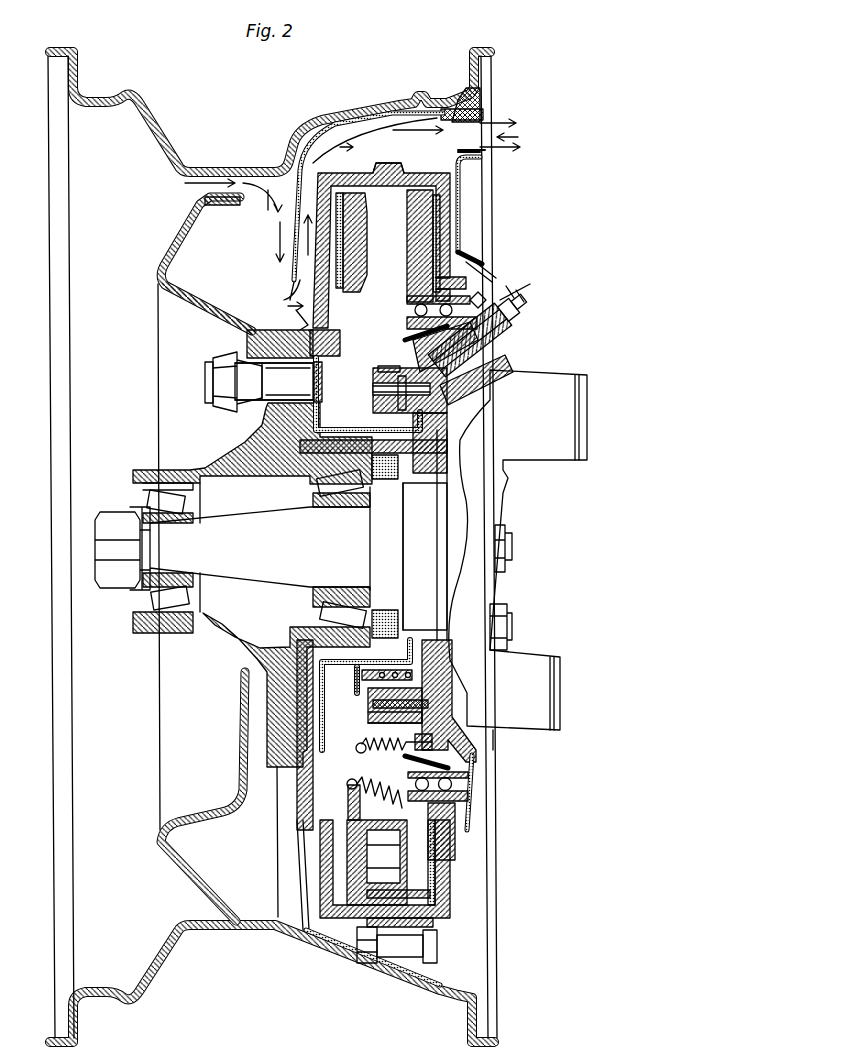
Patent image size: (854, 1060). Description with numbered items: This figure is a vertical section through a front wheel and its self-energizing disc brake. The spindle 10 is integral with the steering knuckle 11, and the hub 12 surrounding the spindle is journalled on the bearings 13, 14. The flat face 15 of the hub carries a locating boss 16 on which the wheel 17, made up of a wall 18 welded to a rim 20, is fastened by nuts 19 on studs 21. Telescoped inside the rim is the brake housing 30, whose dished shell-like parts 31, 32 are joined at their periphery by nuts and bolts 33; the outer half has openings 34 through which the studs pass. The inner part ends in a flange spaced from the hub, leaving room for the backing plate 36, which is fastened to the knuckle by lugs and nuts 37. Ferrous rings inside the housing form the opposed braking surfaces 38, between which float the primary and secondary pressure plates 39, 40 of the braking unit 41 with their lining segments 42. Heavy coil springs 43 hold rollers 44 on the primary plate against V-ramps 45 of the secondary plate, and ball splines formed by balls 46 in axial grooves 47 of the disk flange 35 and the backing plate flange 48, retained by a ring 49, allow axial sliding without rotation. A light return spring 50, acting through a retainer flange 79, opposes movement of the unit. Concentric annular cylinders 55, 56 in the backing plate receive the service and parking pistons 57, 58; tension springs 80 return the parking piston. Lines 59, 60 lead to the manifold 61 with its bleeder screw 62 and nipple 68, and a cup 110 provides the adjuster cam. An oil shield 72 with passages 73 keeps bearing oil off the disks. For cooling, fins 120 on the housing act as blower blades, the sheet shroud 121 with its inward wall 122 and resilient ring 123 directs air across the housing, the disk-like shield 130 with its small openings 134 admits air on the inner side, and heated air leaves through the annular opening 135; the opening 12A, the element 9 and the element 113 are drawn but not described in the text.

The seal 9 is at (400, 455).
The front wheel spindle 10 is at (262, 530).
The steering knuckle 11 is at (556, 372).
The hub 12 is at (230, 653).
The vent opening 12A is at (203, 198).
The front wheel bearing 13 is at (200, 602).
The front wheel bearing 14 is at (318, 608).
The face of the hub 15 is at (250, 346).
The locating boss 16 is at (290, 420).
The wheel 17 is at (166, 230).
The wall 18 is at (204, 304).
The nuts 19 is at (222, 408).
The rim 20 is at (148, 118).
The studs 21 is at (206, 384).
The brake housing 30 is at (286, 302).
The shell-like part 31 is at (366, 172).
The shell-like part 32 is at (404, 170).
The nuts and bolts 33 is at (395, 960).
The openings 34 is at (322, 376).
The flange 35 is at (474, 832).
The brake backing plate 36 is at (476, 758).
The lugs and nuts 37 is at (513, 546).
The braking surfaces 38 is at (338, 290).
The primary pressure plate 39 is at (362, 258).
The secondary pressure plate 40 is at (407, 286).
The braking unit 41 is at (436, 296).
The brake lining segments 42 is at (343, 192).
The heavy coil springs 43 is at (386, 784).
The rollers 44 is at (372, 840).
The V-ramps 45 is at (398, 903).
The balls 46 is at (468, 782).
The axial grooves 47 is at (415, 312).
The flange 48 is at (405, 338).
The retainer ring 49 is at (480, 302).
The return coil spring 50 is at (360, 416).
The inner annular hydraulic cylinder 55 is at (373, 390).
The outer annular hydraulic cylinder 56 is at (390, 366).
The service brake piston 57 is at (370, 702).
The parking brake piston 58 is at (368, 720).
The line 59 is at (447, 426).
The line 60 is at (425, 372).
The manifold 61 is at (488, 382).
The bleeder screw 62 is at (512, 336).
The nipple 68 is at (520, 318).
The oil shield 72 is at (312, 382).
The passages 73 is at (296, 314).
The radially extending flange 79 is at (355, 690).
The tension springs 80 is at (362, 752).
The cup 110 is at (426, 340).
The pin 113 is at (398, 378).
The fins 120 is at (485, 150).
The annular shield 121 is at (478, 124).
The inwardly extending wall 122 is at (272, 216).
The resilient ring 123 is at (484, 96).
The disk-like shield 130 is at (478, 218).
The small openings 134 is at (488, 268).
The annular opening 135 is at (517, 135).